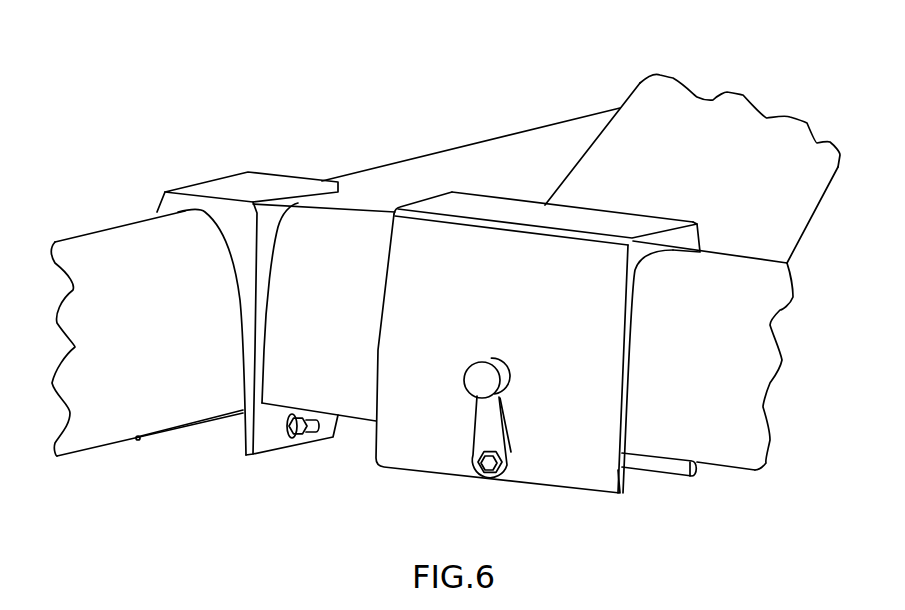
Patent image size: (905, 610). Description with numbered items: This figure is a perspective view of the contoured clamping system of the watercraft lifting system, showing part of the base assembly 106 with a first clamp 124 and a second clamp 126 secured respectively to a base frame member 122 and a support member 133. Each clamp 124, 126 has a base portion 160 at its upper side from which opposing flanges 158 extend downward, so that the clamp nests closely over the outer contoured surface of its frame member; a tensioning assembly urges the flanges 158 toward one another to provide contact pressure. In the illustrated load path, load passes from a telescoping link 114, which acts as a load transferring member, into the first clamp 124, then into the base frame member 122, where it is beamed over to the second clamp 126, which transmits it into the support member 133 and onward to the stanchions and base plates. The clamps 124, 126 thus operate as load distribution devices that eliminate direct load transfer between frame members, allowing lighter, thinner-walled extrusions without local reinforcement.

The base assembly 106 is at (327, 86).
The telescoping link 114 is at (647, 110).
The base frame member 122 is at (720, 410).
The first clamp 124 is at (438, 452).
The second clamp 126 is at (212, 183).
The support member 133 is at (413, 160).
The flange 158 is at (265, 437).
The base portion 160 is at (260, 185).